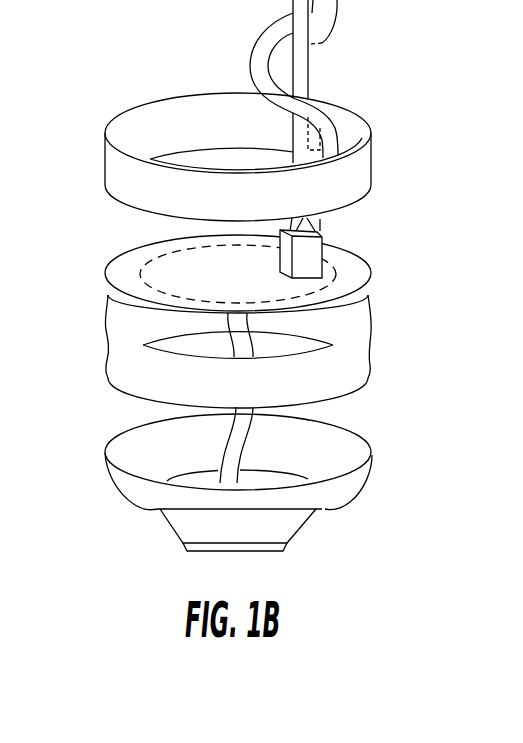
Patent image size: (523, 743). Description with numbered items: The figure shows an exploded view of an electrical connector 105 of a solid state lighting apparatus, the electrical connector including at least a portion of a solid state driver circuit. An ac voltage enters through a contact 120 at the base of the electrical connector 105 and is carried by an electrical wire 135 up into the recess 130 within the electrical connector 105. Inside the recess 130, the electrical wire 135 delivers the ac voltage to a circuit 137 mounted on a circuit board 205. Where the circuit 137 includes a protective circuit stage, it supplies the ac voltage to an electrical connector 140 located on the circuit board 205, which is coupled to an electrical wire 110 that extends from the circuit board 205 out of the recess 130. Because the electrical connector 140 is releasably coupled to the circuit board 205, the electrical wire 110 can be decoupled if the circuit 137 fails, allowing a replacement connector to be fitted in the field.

The electrical connector 105 is at (103, 173).
The electrical wire 110 is at (311, 44).
The contact 120 is at (268, 552).
The recess 130 is at (160, 117).
The electrical wire 135 is at (248, 438).
The circuit 137 is at (158, 256).
The electrical connector 140 is at (323, 256).
The circuit board 205 is at (108, 276).